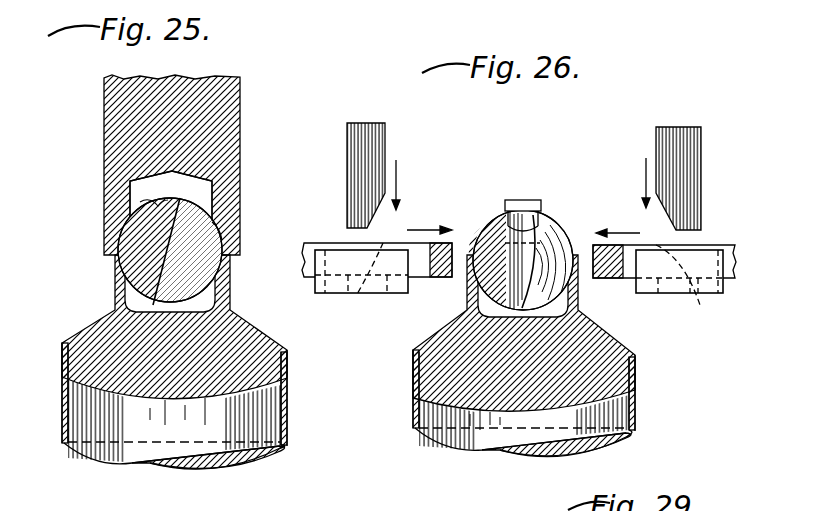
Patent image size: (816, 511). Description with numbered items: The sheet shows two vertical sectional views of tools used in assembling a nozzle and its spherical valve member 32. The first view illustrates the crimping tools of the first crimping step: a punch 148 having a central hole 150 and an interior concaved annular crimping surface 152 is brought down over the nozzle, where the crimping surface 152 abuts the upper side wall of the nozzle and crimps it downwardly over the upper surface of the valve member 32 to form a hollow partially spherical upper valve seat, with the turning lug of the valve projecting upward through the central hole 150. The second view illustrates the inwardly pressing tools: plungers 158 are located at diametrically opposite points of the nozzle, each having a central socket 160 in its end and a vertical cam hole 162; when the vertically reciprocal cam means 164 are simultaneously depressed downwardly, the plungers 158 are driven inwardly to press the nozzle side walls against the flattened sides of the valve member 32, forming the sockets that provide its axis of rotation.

In FIG. 25, the punch 148 is at (124, 118).
In FIG. 25, the central hole 150 is at (145, 187).
In FIG. 25, the interior concaved annular crimping surface 152 is at (225, 231).
In FIG. 25, the valve member 32 is at (136, 268).
In FIG. 26, the valve member 32 is at (497, 240).
In FIG. 26, the vertically reciprocal cam means 164 is at (374, 160).
In FIG. 26, the plunger 158 is at (519, 291).
In FIG. 26, the central socket 160 is at (450, 283).
In FIG. 26, the vertical cam hole 162 is at (370, 283).